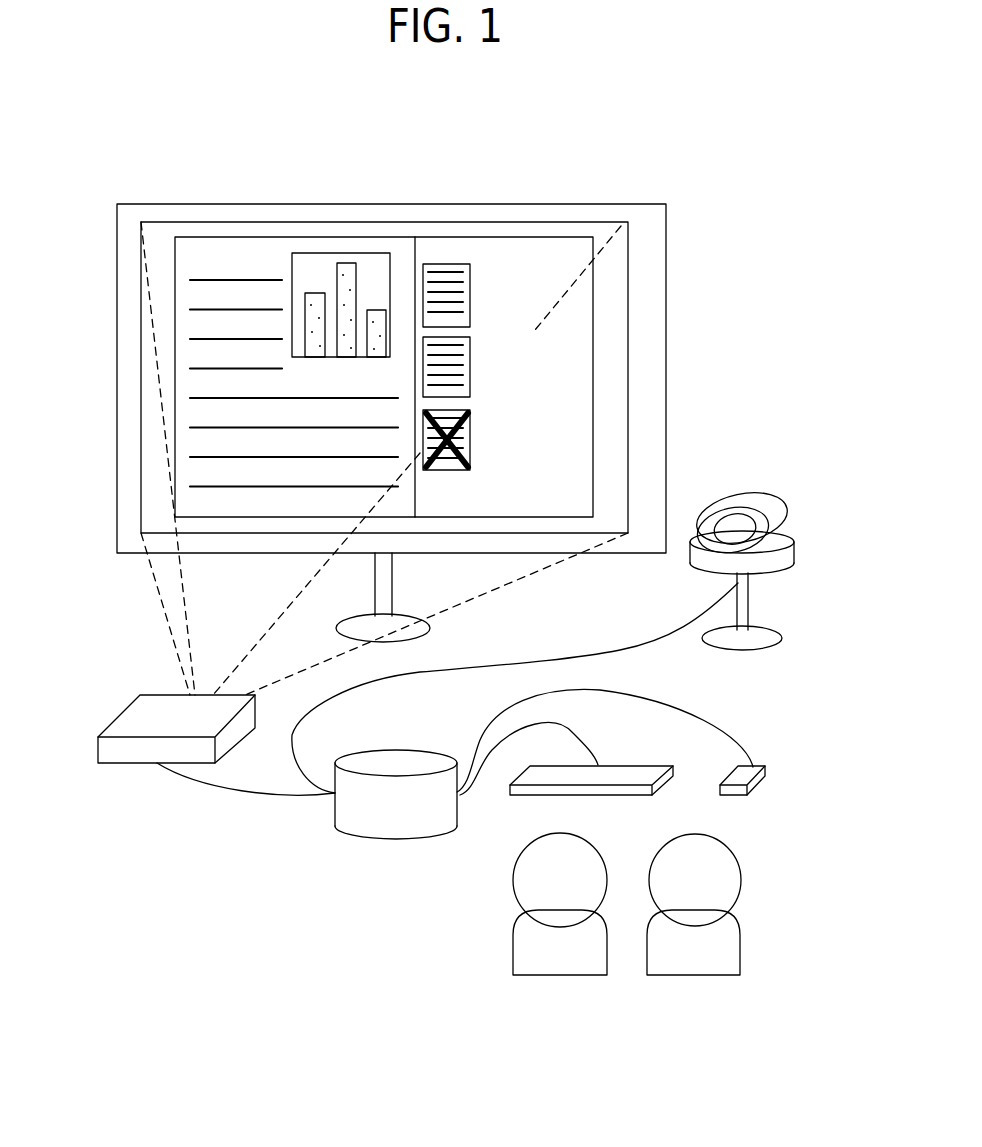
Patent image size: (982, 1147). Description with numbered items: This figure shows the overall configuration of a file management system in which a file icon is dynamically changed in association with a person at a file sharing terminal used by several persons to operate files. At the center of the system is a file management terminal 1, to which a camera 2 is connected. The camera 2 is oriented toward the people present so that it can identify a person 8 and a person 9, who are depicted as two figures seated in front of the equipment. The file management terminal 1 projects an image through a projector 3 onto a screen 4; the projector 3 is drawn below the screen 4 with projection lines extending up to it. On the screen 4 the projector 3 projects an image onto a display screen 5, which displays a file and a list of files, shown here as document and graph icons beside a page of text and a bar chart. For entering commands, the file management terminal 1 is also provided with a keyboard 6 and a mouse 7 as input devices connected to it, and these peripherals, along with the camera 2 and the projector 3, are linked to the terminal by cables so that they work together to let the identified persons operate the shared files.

The file management terminal 1 is at (378, 750).
The camera 2 is at (760, 507).
The projector 3 is at (150, 694).
The screen 4 is at (666, 323).
The display screen 5 is at (528, 224).
The keyboard 6 is at (540, 796).
The mouse 7 is at (770, 782).
The person 8 is at (513, 956).
The person 9 is at (740, 955).